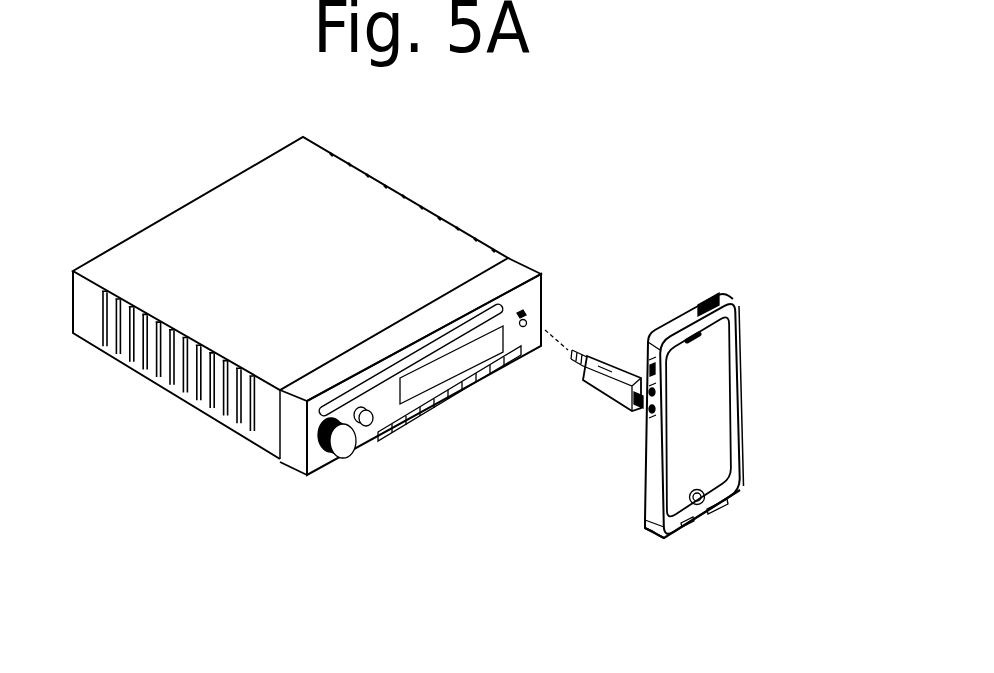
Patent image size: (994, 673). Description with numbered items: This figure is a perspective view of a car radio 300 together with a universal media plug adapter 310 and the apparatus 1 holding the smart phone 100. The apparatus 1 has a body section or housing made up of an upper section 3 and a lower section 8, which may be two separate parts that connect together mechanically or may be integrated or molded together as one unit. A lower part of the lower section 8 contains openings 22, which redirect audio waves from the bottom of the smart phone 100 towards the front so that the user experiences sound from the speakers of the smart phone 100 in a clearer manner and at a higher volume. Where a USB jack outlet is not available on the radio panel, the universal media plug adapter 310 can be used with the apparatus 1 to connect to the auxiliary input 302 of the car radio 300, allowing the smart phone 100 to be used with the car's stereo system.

The car radio 300 is at (187, 197).
The auxiliary input 302 is at (531, 316).
The universal media plug adapter 310 is at (617, 370).
The apparatus 1 is at (747, 322).
The upper section 3 is at (677, 323).
The smart phone 100 is at (702, 430).
The openings 22 is at (700, 523).
The lower section 8 is at (674, 540).